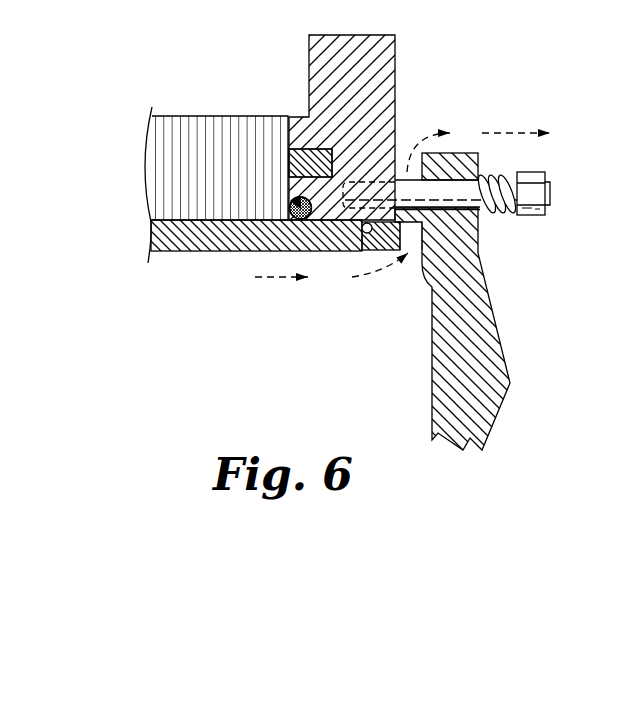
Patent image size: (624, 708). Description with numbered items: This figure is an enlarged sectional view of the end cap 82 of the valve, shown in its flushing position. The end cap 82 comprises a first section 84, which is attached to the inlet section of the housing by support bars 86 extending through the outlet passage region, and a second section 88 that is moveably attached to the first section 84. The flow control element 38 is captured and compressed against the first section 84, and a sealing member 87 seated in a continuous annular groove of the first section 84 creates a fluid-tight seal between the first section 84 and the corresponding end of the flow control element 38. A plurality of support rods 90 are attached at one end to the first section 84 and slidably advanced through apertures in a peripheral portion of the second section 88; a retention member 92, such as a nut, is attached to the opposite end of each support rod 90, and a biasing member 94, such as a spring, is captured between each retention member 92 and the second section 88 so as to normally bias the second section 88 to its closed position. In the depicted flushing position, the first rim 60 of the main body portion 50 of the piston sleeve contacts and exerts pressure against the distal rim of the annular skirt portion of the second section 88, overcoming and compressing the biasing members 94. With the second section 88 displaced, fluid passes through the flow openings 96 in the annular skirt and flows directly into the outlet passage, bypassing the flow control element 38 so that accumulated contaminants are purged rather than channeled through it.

The flow control element 38 is at (183, 103).
The main body portion 50 is at (151, 233).
The first rim 60 is at (362, 231).
The end cap 82 is at (514, 342).
The first section 84 is at (370, 143).
The support bars 86 is at (303, 128).
The sealing member 87 is at (292, 223).
The second section 88 is at (473, 315).
The support rods 90 is at (480, 238).
The retention member 92 is at (535, 175).
The biasing member 94 is at (505, 213).
The flow openings 96 is at (413, 242).